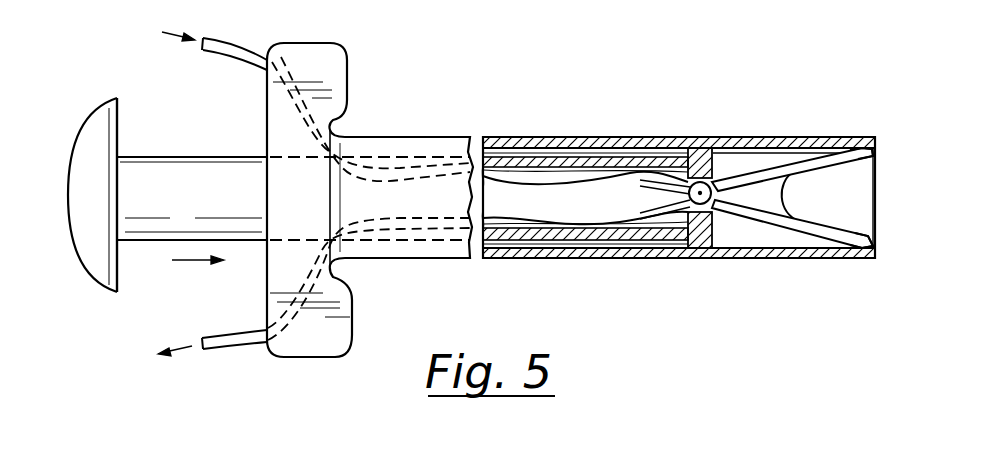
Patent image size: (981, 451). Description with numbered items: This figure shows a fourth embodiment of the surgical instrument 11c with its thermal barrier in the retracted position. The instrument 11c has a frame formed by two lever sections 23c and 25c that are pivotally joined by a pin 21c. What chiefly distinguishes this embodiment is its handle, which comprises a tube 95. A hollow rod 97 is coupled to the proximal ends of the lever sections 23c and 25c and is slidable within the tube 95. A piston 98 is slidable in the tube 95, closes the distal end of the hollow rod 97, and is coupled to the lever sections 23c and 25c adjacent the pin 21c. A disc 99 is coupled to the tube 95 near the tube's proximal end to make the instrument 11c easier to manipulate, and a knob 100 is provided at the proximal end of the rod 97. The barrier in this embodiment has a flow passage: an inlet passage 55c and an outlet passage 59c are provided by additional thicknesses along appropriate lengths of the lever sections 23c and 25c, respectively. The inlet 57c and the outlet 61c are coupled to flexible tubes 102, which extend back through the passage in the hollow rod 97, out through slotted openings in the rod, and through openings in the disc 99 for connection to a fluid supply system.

The surgical instrument 11c is at (621, 110).
The pin 21c is at (701, 197).
The lever section 23c is at (840, 149).
The lever section 25c is at (833, 238).
The inlet passage 55c is at (760, 171).
The inlet 57c is at (673, 150).
The outlet passage 59c is at (745, 216).
The outlet 61c is at (683, 248).
The tube 95 is at (508, 138).
The hollow rod 97 is at (562, 157).
The piston 98 is at (703, 150).
The disc 99 is at (333, 80).
The knob 100 is at (85, 165).
The flexible tubes 102 is at (241, 67).